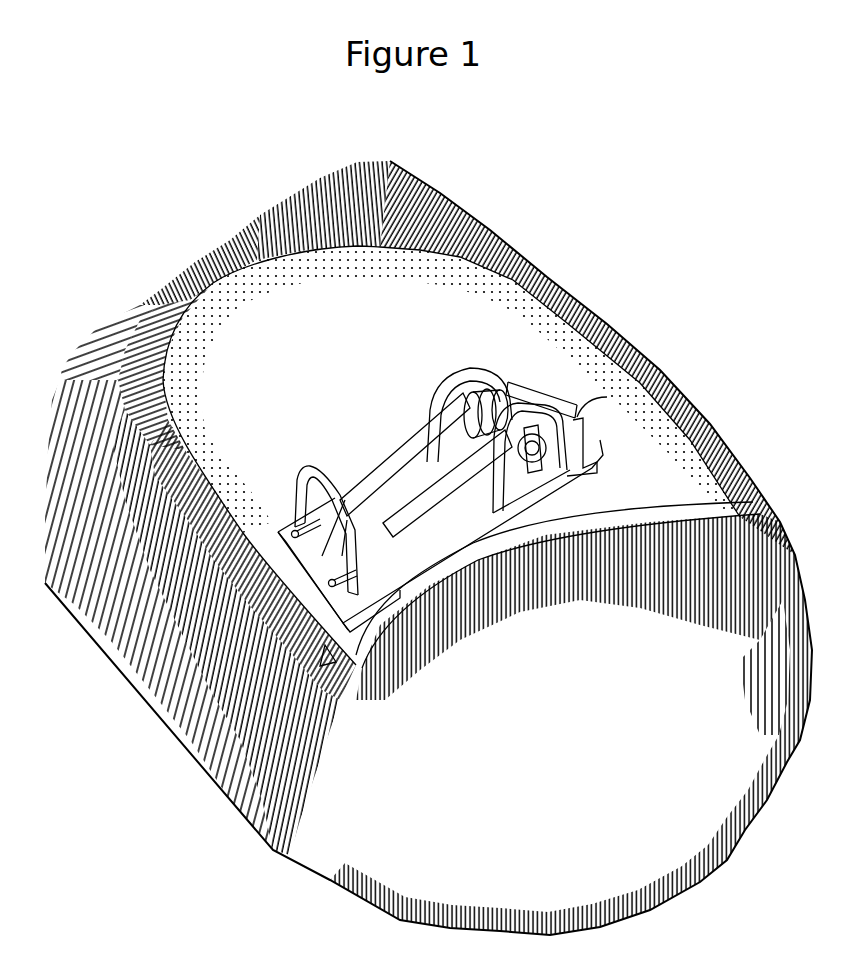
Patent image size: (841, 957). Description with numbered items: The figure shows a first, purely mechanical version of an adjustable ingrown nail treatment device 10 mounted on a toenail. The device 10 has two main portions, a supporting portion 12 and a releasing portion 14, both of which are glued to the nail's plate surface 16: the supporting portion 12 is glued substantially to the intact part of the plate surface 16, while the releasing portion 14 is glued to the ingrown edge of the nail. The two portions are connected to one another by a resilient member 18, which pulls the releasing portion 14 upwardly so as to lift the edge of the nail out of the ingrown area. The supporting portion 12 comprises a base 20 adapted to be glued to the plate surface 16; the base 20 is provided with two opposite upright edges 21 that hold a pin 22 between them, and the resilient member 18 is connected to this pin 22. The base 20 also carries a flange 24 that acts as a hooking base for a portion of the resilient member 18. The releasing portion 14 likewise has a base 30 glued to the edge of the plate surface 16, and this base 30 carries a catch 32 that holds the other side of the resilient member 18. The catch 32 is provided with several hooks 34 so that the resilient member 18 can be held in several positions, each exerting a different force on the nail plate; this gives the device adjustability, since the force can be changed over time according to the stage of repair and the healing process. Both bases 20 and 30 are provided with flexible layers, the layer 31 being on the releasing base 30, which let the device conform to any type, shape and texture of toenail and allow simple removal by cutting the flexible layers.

The adjustable ingrown nail treatment device 10 is at (449, 467).
The supporting portion 12 is at (557, 518).
The releasing portion 14 is at (372, 618).
The nail plate surface 16 is at (220, 413).
The resilient member 18 is at (377, 467).
The base 20 is at (473, 478).
The upright edges 21 is at (462, 390).
The pin 22 is at (532, 448).
The flange 24 is at (583, 410).
The base 30 is at (303, 557).
The flexible layer 31 is at (328, 652).
The catch 32 is at (307, 465).
The hooks 34 is at (303, 510).